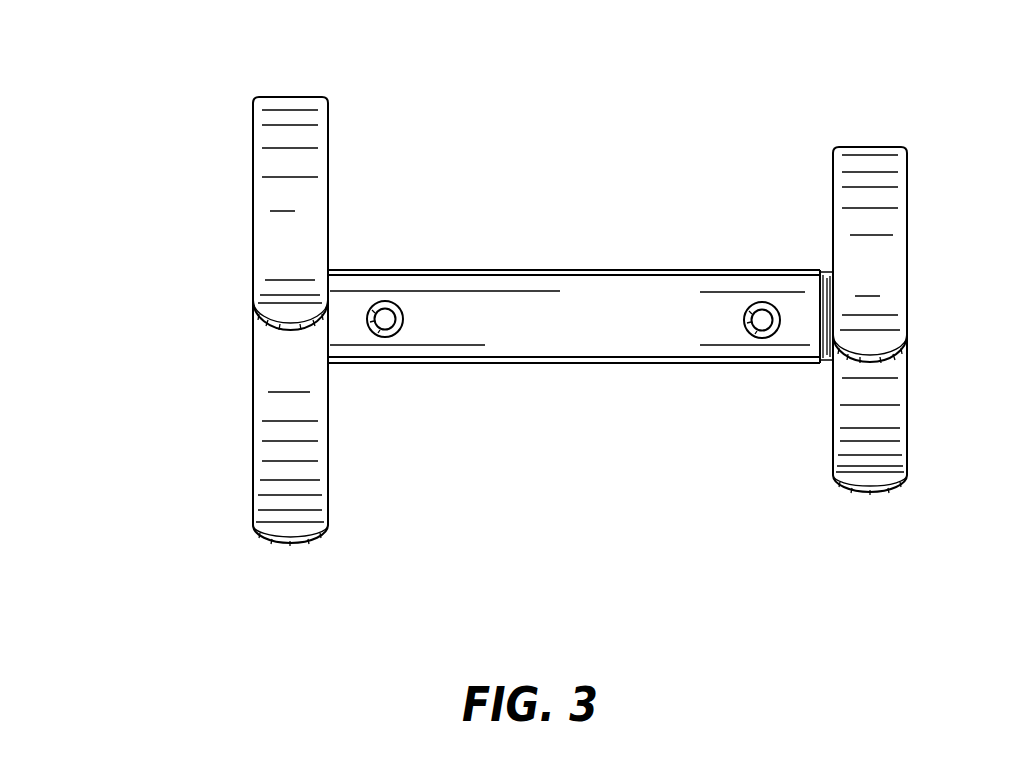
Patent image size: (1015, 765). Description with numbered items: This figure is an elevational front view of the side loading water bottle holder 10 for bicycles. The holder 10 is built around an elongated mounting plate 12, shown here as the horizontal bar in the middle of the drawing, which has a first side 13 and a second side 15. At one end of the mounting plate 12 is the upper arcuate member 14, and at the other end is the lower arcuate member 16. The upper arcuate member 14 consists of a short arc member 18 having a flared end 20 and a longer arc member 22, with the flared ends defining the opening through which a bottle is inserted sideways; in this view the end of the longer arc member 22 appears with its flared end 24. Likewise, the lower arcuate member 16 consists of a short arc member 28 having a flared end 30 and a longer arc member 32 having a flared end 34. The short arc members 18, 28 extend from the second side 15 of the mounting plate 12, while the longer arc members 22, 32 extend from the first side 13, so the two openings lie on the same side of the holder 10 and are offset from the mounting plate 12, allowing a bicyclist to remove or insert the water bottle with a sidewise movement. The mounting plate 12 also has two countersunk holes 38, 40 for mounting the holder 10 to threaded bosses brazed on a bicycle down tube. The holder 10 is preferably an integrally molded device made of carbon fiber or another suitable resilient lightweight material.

The water bottle holder 10 is at (522, 130).
The mounting plate 12 is at (612, 350).
The first side 13 is at (515, 363).
The upper arcuate member 14 is at (930, 239).
The second side 15 is at (535, 270).
The lower arcuate member 16 is at (208, 183).
The short arc member 18 is at (885, 283).
The flared end 20 is at (875, 356).
The longer arc member 22 is at (893, 437).
The right bottom cap 24 is at (860, 491).
The short arc member 28 is at (315, 180).
The flared end 30 is at (283, 324).
The longer arc member 32 is at (262, 452).
The flared end 34 is at (283, 542).
The countersunk hole 38 is at (757, 339).
The countersunk hole 40 is at (383, 338).